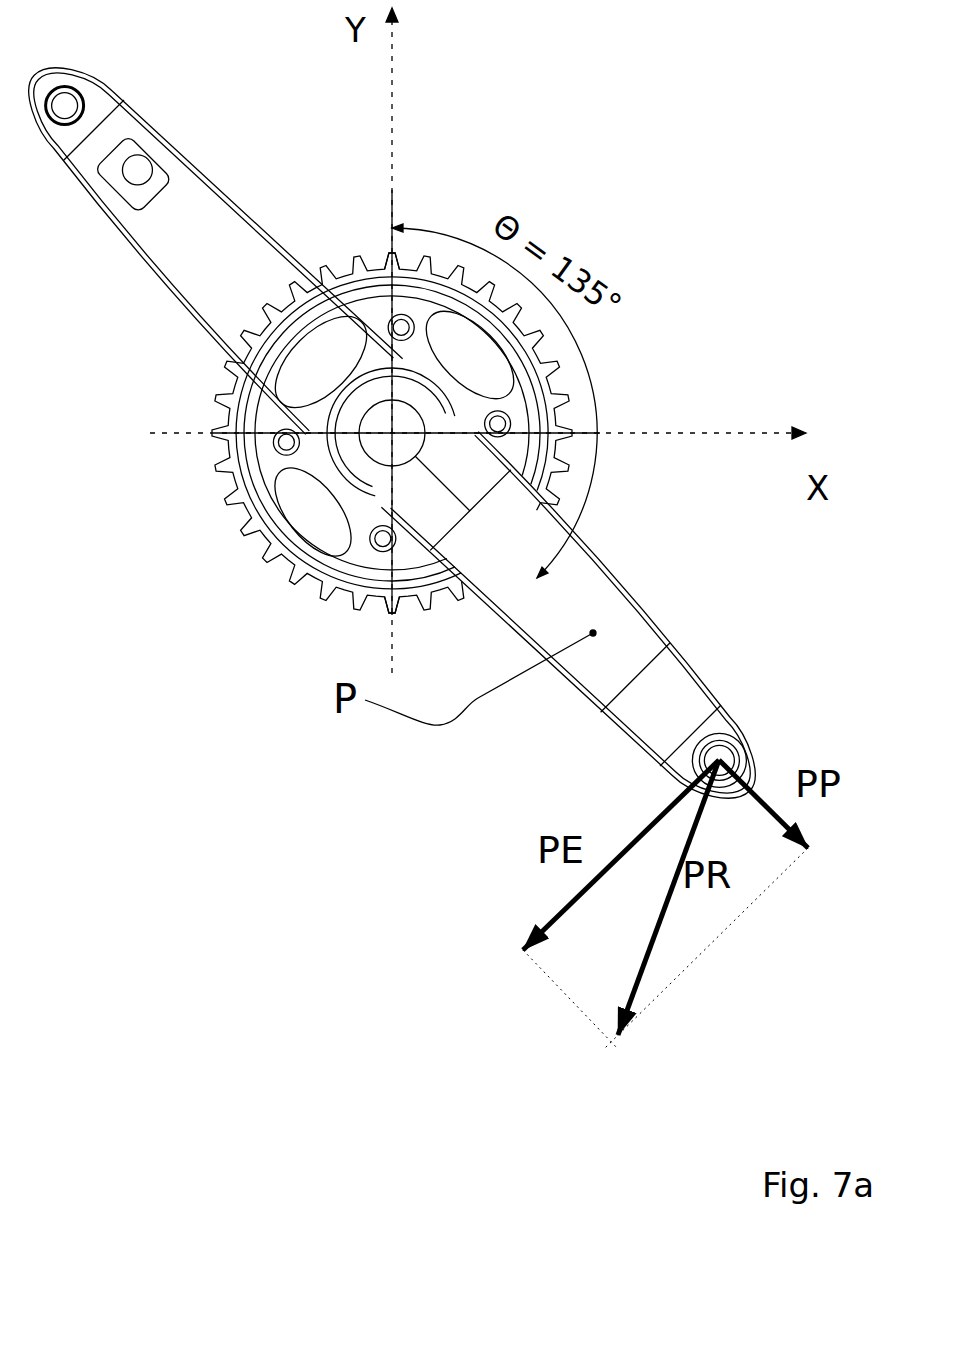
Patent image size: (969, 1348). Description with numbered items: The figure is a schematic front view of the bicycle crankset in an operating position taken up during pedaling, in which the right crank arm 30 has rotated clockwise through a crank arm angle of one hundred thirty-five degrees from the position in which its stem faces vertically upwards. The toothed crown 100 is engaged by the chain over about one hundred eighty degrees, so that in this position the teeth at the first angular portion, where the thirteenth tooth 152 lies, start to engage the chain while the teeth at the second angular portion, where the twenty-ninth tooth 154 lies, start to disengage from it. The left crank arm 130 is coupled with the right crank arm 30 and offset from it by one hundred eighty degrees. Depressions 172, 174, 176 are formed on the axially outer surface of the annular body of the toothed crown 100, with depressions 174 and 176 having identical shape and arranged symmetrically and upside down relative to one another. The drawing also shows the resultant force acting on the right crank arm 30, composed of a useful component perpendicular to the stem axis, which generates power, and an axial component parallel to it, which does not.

The right crank arm 30 is at (578, 693).
The toothed crown 100 is at (270, 553).
The left crank arm 130 is at (136, 252).
The thirteenth tooth 152 is at (393, 262).
The twenty-ninth tooth 154 is at (394, 614).
The depression 172 is at (292, 343).
The depression 174 is at (310, 542).
The depression 176 is at (490, 340).